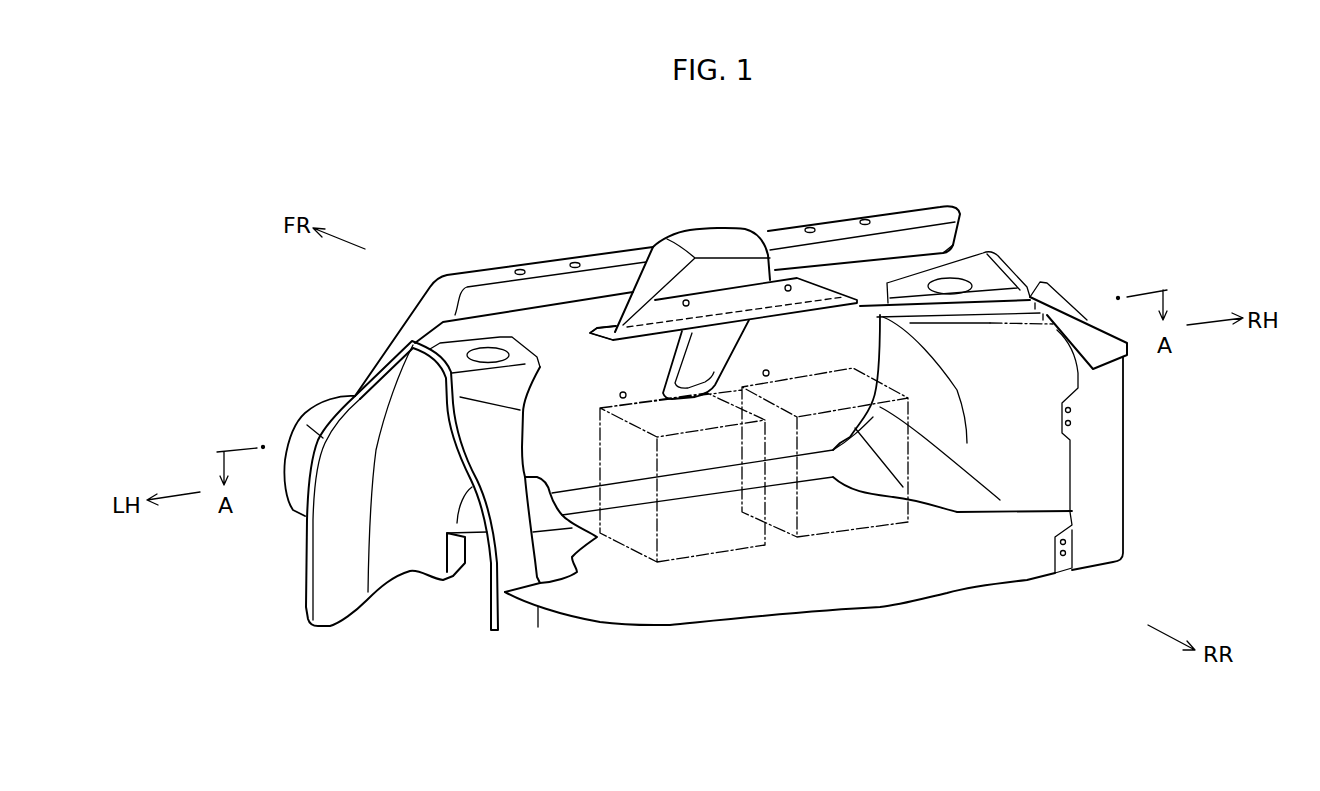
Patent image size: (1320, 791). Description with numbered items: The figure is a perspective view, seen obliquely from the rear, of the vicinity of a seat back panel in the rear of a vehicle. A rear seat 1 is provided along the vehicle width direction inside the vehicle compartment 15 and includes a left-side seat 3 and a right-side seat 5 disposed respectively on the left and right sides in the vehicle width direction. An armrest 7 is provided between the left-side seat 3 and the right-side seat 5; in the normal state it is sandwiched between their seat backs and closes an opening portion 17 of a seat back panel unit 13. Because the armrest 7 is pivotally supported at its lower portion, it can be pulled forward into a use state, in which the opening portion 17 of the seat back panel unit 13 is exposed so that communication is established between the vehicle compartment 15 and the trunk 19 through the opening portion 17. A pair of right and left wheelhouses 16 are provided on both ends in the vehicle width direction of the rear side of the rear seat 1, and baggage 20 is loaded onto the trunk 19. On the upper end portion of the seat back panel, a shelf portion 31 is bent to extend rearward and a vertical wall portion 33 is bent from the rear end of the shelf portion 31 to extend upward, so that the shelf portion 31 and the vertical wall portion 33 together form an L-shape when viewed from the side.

The rear seat 1 is at (975, 207).
The left-side seat 3 is at (555, 268).
The right-side seat 5 is at (905, 218).
The armrest 7 is at (707, 240).
The seat back panel unit 13 is at (567, 388).
The vehicle compartment 15 is at (373, 320).
The wheelhouses 16 is at (343, 588).
The opening portion 17 is at (690, 380).
The trunk 19 is at (924, 359).
The baggage 20 is at (830, 533).
The shelf portion 31 is at (622, 322).
The vertical wall portion 33 is at (770, 297).